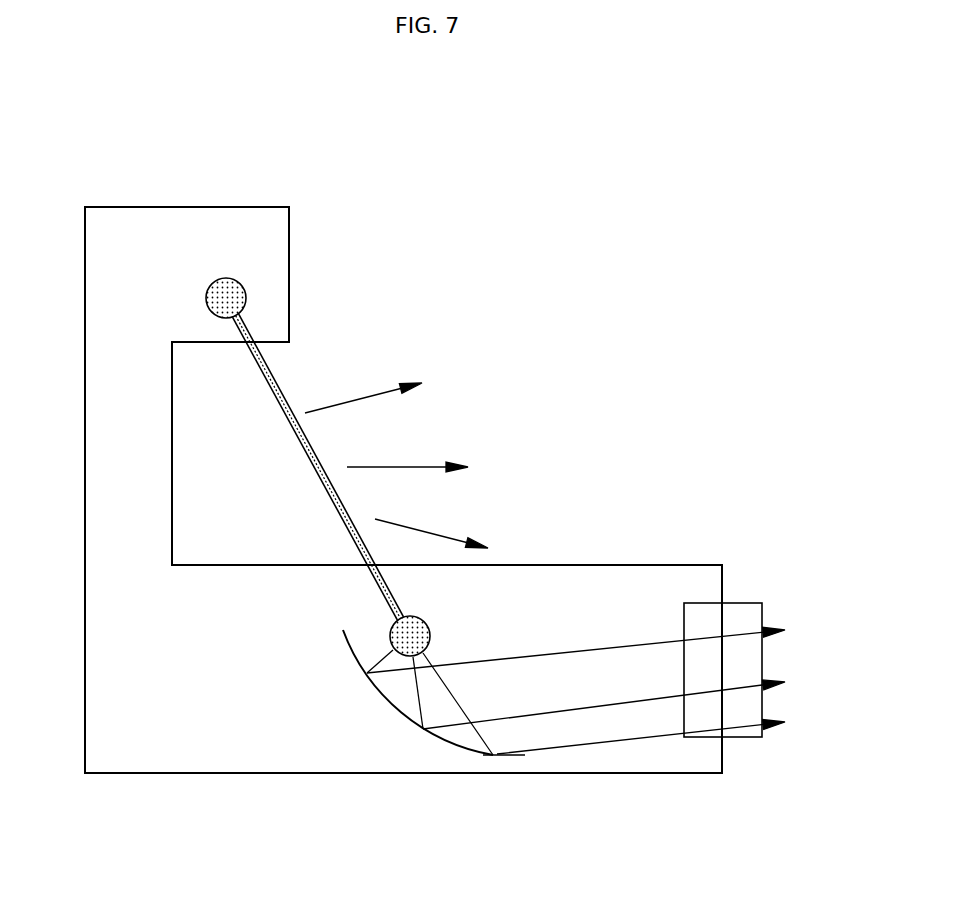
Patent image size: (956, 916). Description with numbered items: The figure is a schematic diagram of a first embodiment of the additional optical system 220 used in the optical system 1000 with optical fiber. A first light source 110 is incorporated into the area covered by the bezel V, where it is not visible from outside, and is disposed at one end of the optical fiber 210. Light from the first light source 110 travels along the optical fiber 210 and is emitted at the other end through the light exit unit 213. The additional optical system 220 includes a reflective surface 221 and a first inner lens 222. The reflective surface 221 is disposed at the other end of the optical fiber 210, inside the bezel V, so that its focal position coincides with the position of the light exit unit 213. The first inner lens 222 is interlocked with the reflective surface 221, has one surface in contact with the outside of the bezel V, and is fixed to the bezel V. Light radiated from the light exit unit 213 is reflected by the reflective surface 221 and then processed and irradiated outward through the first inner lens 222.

The bezel V is at (135, 228).
The optical system 1000 is at (540, 170).
The first light source 110 is at (242, 285).
The optical fiber 210 is at (277, 380).
The light exit unit 213 is at (430, 622).
The additional optical system 220 is at (355, 727).
The reflective surface 221 is at (443, 740).
The first inner lens 222 is at (745, 738).